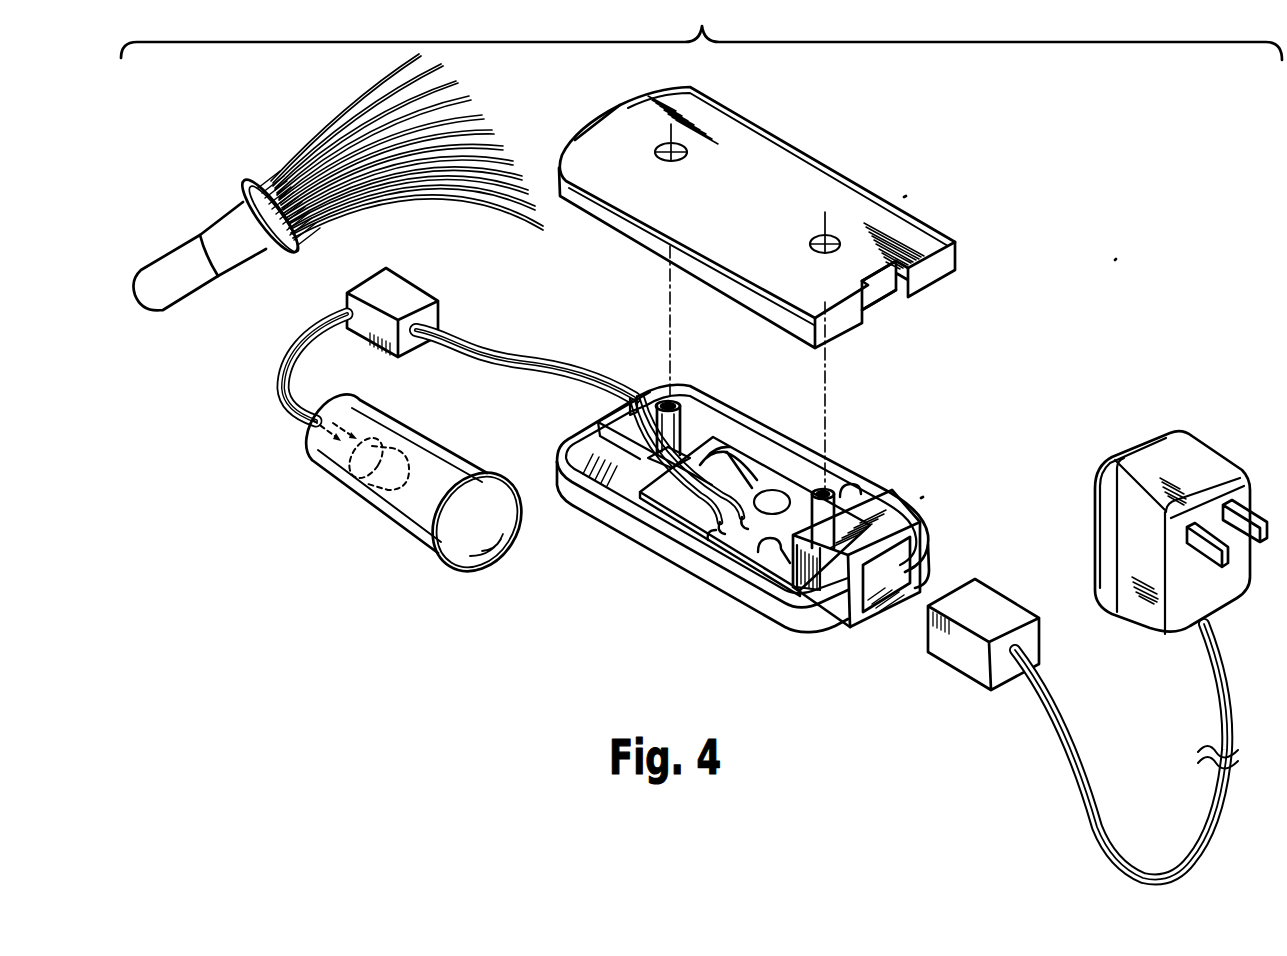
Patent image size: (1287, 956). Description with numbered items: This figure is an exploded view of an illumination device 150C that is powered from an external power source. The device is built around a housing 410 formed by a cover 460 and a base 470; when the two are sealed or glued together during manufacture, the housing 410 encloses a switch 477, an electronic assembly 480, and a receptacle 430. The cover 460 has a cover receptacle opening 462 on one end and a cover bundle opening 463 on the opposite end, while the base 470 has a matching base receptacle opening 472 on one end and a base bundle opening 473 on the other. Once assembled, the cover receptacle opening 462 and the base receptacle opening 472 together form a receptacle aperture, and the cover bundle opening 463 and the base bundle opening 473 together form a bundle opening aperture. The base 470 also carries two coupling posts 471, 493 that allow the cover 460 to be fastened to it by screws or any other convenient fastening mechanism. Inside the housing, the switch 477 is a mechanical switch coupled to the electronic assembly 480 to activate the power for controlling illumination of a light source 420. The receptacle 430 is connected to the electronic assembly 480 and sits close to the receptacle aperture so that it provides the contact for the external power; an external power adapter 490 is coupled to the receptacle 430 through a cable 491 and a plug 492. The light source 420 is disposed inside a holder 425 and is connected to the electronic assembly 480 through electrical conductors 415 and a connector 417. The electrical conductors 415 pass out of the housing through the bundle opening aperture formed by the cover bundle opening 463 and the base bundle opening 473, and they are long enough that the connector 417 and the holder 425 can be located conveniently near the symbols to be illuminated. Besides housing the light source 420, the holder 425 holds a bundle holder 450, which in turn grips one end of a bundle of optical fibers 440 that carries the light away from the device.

The illumination device 150C is at (1128, 255).
The housing 410 is at (916, 195).
The electrical conductors 415 is at (490, 356).
The connector 417 is at (391, 292).
The light source 420 is at (362, 479).
The holder 425 is at (404, 540).
The receptacle 430 is at (914, 505).
The bundle of optical fibers 440 is at (361, 96).
The bundle holder 450 is at (199, 236).
The cover 460 is at (767, 154).
The cover receptacle opening 462 is at (885, 298).
The cover bundle opening 463 is at (603, 121).
The base 470 is at (817, 630).
The coupling post 471 is at (673, 393).
The base receptacle opening 472 is at (842, 615).
The base bundle opening 473 is at (657, 385).
The switch 477 is at (724, 438).
The electronic assembly 480 is at (702, 542).
The external power adapter 490 is at (1160, 635).
The cable 491 is at (1066, 753).
The plug 492 is at (973, 687).
The coupling post 493 is at (826, 490).